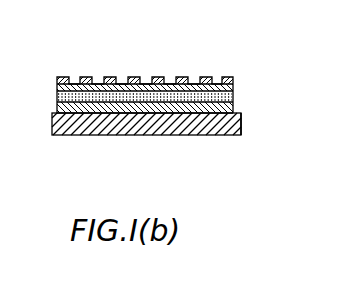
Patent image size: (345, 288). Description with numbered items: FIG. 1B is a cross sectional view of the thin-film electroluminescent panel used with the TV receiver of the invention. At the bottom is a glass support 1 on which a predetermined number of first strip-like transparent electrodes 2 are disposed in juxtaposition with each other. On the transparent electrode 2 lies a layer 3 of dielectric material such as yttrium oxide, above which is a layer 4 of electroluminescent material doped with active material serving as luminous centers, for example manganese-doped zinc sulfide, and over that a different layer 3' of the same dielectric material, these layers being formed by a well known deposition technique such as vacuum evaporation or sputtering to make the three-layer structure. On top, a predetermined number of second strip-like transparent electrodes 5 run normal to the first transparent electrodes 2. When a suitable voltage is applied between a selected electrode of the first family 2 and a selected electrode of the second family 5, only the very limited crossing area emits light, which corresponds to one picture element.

The glass support 1 is at (218, 125).
The first strip-like transparent electrodes 2 is at (242, 118).
The layer of dielectric material 3 is at (166, 118).
The different layer of dielectric material 3' is at (169, 57).
The layer of electroluminescent material 4 is at (235, 97).
The second strip-like transparent electrodes 5 is at (209, 77).